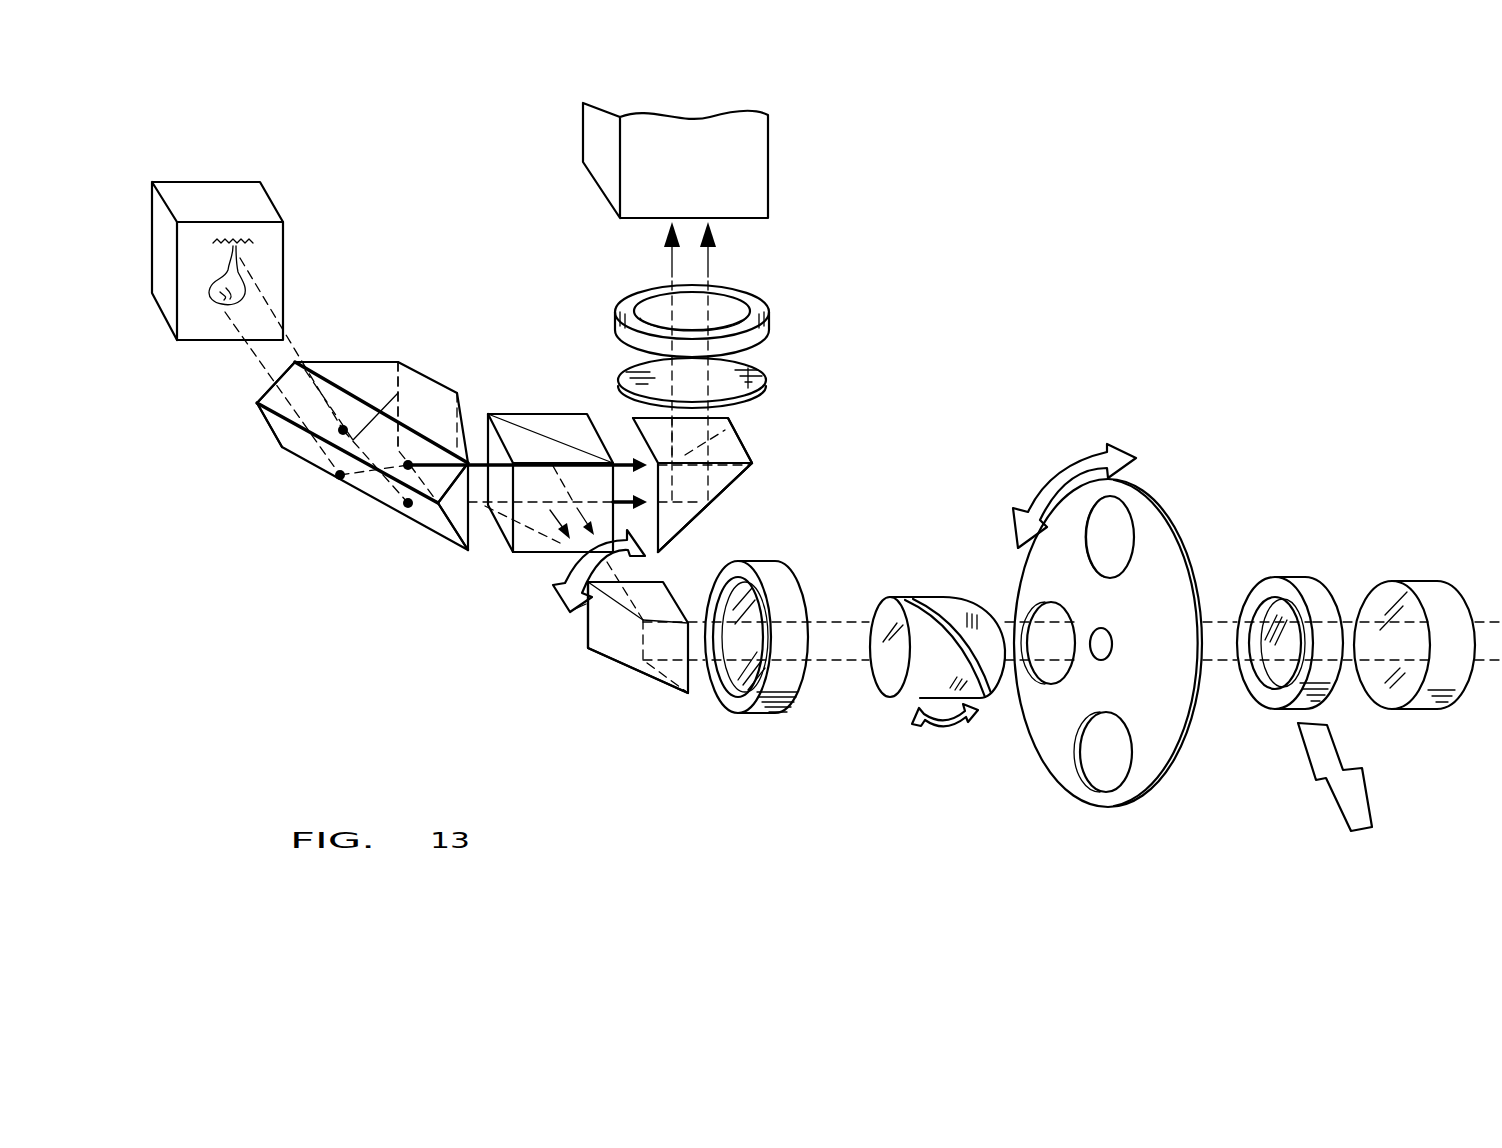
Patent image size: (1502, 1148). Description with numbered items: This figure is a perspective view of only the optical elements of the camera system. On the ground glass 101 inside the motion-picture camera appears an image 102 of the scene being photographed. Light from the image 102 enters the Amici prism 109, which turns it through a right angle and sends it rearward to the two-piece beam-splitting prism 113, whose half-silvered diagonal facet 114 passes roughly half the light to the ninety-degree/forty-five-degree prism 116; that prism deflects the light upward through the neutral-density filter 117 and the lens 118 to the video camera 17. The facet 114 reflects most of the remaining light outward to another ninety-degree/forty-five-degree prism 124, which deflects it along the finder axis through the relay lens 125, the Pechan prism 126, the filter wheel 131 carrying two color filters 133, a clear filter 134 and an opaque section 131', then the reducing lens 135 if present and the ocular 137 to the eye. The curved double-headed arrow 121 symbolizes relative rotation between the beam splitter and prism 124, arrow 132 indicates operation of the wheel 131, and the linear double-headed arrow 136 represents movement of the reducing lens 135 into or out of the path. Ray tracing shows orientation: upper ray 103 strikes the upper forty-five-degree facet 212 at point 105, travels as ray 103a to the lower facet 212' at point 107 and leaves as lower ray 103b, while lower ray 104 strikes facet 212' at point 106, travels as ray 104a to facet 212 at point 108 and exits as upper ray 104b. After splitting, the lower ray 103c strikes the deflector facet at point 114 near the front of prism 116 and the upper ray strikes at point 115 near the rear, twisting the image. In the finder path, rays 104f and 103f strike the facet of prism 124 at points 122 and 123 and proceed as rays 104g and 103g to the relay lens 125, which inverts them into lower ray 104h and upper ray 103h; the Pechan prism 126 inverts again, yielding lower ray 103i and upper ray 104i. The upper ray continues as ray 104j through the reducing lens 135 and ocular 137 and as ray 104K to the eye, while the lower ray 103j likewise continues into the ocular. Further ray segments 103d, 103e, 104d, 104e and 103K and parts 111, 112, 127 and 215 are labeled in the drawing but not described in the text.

The video camera 17 is at (710, 163).
The ground glass 101 is at (283, 240).
The image 102 is at (207, 290).
The upper ray 103 is at (287, 333).
The ray 103a is at (393, 408).
The lower ray 103b is at (478, 515).
The lower ray 103c is at (587, 500).
The light ray segment 103d is at (703, 433).
The light ray segment 103e is at (672, 267).
The lower ray 103f is at (575, 609).
The lower ray 103g is at (708, 700).
The upper ray 103h is at (837, 622).
The lower ray 103i is at (995, 685).
The lower ray 103j is at (1222, 663).
The light ray segment 103K is at (1473, 673).
The lower ray 104 is at (260, 355).
The ray 104a is at (358, 475).
The upper ray 104b is at (478, 463).
The light ray segment 104d is at (712, 437).
The light ray segment 104e is at (733, 287).
The upper ray 104f is at (614, 558).
The upper ray 104g is at (722, 590).
The lower ray 104h is at (852, 662).
The upper ray 104i is at (995, 622).
The upper ray 104j is at (1220, 624).
The upper ray 104K is at (1477, 622).
The point 105 is at (345, 425).
The point 106 is at (335, 474).
The point 107 is at (407, 508).
The point 108 is at (406, 470).
The Amici prism 109 is at (445, 366).
The beam splitter cube 111 is at (545, 413).
The prism face 112 is at (550, 552).
The beam-splitting prism 113 is at (668, 545).
The half-silvered diagonal facet 114 is at (490, 412).
The point 115 is at (733, 487).
The ninety-degree/forty-five-degree prism 116 is at (747, 452).
The neutral-density filter 117 is at (727, 373).
The lens 118 is at (735, 294).
The curved double-headed arrow 121 is at (563, 580).
The point 122 is at (615, 655).
The point 123 is at (647, 668).
The ninety-degree/forty-five-degree prism 124 is at (586, 636).
The relay lens 125 is at (743, 613).
The Pechan prism 126 is at (938, 598).
The rotation arrow 127 is at (940, 730).
The filter wheel 131 is at (1136, 635).
The opaque section 131' is at (1130, 770).
The arrow 132 is at (1082, 463).
The color filters 133 is at (1040, 663).
The clear filter 134 is at (1117, 527).
The reducing lens 135 is at (1290, 632).
The linear double-headed arrow 136 is at (1301, 777).
The ocular 137 is at (1410, 584).
The upper forty-five-degree facet 212 is at (228, 384).
The lower forty-five-degree facet 212' is at (235, 433).
The prism edge 215 is at (273, 418).